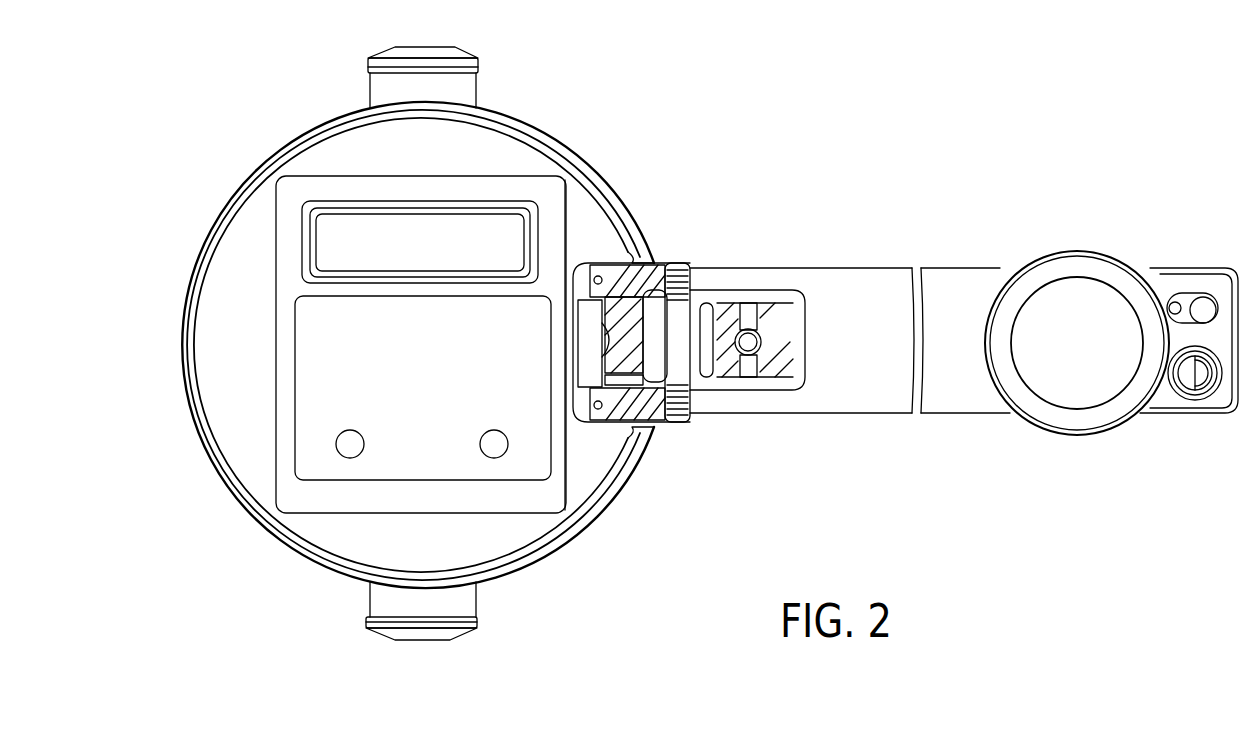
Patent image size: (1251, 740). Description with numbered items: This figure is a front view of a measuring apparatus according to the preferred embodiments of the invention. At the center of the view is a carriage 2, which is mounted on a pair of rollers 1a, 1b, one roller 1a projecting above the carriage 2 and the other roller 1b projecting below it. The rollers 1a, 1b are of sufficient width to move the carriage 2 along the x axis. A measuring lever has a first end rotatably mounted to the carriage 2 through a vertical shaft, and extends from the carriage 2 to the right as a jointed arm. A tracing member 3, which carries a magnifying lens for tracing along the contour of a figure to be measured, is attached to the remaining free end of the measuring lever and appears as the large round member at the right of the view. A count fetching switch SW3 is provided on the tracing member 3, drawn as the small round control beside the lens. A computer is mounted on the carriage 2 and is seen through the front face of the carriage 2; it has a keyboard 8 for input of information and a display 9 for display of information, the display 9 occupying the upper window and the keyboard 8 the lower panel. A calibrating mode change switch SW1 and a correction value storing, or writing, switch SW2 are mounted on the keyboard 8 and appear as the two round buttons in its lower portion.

The roller 1a is at (457, 91).
The roller 1b is at (458, 604).
The carriage 2 is at (183, 377).
The tracing member 3 is at (1072, 396).
The keyboard 8 is at (285, 415).
The display 9 is at (503, 232).
The calibrating mode change switch SW1 is at (343, 451).
The correction value storing switch SW2 is at (493, 447).
The count fetching switch SW3 is at (1188, 394).